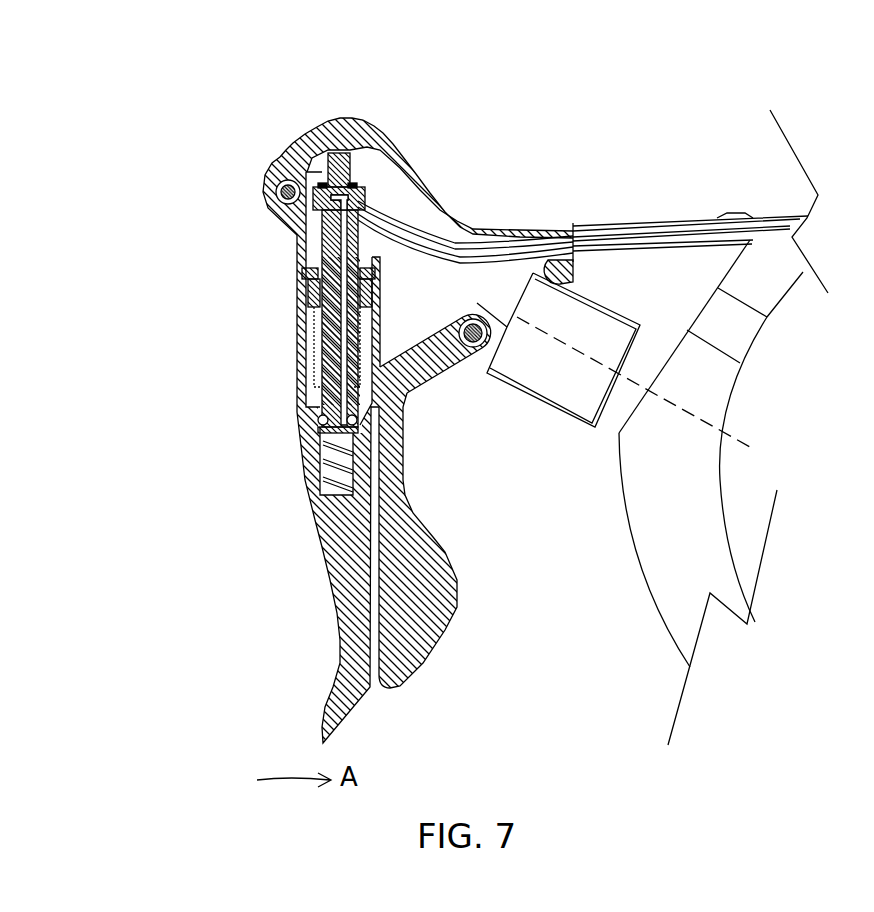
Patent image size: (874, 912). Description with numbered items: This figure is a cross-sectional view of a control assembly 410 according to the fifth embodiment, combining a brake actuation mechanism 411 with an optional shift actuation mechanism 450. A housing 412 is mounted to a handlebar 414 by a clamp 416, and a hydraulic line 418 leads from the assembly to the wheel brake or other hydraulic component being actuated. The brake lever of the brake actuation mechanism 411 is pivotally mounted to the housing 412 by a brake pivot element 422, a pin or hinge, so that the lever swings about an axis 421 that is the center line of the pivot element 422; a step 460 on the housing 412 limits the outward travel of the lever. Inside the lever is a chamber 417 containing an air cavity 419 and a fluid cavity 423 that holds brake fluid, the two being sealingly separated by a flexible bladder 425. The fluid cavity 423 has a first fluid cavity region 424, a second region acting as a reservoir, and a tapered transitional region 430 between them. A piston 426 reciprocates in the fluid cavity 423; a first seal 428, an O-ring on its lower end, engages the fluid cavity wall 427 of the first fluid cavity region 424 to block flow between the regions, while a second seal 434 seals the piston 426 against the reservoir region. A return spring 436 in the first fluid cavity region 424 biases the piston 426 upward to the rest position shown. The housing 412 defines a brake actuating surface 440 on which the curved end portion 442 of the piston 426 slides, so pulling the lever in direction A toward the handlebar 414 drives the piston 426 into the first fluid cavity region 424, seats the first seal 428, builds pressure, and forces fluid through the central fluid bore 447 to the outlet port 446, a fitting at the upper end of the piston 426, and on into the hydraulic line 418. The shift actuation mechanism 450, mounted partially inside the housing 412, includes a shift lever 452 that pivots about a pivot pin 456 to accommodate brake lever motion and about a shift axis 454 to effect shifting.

The control assembly 410 is at (603, 183).
The brake actuation mechanism 411 is at (240, 620).
The housing 412 is at (632, 220).
The handlebar 414 is at (703, 490).
The clamp 416 is at (740, 335).
The chamber 417 is at (283, 348).
The hydraulic line 418 is at (673, 217).
The air cavity 419 is at (380, 302).
The axis 421 is at (275, 191).
The brake pivot element 422 is at (273, 170).
The fluid cavity 423 is at (360, 400).
The first fluid cavity region 424 is at (313, 400).
The flexible bladder 425 is at (358, 335).
The piston 426 is at (322, 330).
The fluid cavity wall 427 is at (327, 453).
The first seal 428 is at (314, 425).
The tapered transitional region 430 is at (317, 418).
The second seal 434 is at (306, 285).
The return spring 436 is at (322, 495).
The brake actuating surface 440 is at (362, 143).
The curved end portion 442 is at (331, 150).
The outlet port 446 is at (363, 200).
The central fluid bore 447 is at (340, 257).
The shift actuation mechanism 450 is at (537, 427).
The shift lever 452 is at (427, 658).
The shift axis 454 is at (738, 437).
The pivot pin 456 is at (480, 357).
The step 460 is at (273, 157).